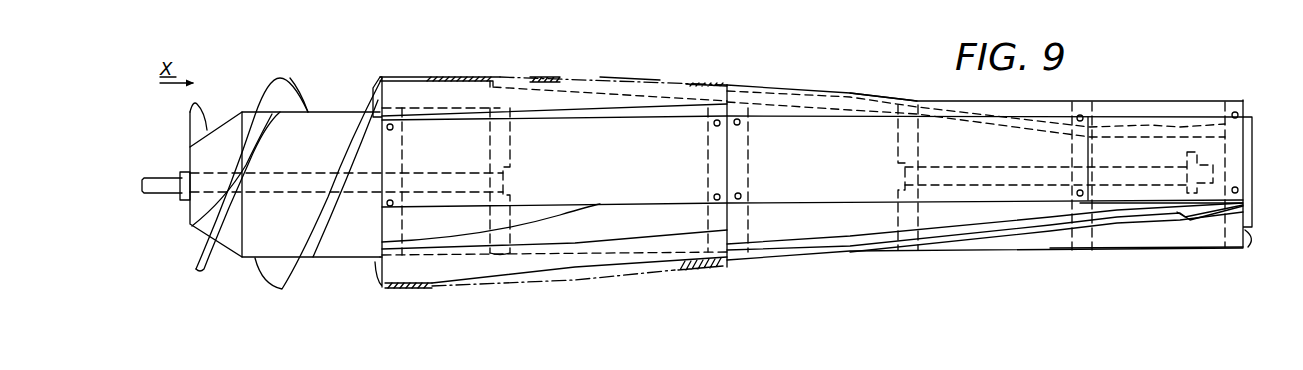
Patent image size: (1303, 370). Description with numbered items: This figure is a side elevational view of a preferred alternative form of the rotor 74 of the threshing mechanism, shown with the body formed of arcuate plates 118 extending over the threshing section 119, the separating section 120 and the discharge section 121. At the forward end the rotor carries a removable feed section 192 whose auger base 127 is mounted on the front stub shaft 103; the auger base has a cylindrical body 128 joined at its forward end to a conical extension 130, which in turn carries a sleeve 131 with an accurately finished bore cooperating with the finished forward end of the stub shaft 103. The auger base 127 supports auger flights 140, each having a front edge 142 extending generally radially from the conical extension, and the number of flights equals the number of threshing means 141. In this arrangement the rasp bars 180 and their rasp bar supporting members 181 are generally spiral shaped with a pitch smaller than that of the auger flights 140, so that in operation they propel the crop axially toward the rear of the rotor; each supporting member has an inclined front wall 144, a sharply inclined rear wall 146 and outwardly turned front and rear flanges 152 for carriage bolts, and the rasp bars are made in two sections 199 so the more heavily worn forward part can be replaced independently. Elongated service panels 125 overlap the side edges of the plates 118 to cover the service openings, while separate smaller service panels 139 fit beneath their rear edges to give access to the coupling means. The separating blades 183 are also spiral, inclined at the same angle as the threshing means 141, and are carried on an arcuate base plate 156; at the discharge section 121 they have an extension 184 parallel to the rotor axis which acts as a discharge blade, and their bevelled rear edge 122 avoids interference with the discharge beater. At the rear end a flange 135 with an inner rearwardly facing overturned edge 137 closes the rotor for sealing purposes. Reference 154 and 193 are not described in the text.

The rotor 74 is at (713, 76).
The front stub shaft 103 is at (165, 196).
The arcuate plates 118 is at (380, 230).
The threshing section 119 is at (604, 64).
The separating section 120 is at (876, 87).
The discharge section 121 is at (1107, 256).
The bevelled rear edge 122 is at (1202, 216).
The service panels 125 is at (383, 197).
The auger base 127 is at (325, 101).
The cylindrical body 128 is at (347, 260).
The conical extension 130 is at (188, 146).
The sleeve 131 is at (183, 172).
The flange 135 is at (1250, 117).
The inner rearwardly facing overturned edge 137 is at (1250, 233).
The separate smaller service panels 139 is at (1088, 140).
The auger flights 140 is at (280, 79).
The threshing means 141 is at (518, 63).
The front edge 142 is at (190, 114).
The front wall 144 is at (441, 95).
The rear wall 146 is at (553, 263).
The front and rear flanges 152 is at (562, 118).
The inlet flange 154 is at (371, 87).
The arcuate base plate 156 is at (835, 202).
The rasp bars 180 is at (428, 78).
The rasp bar supporting members 181 is at (495, 95).
The separating blades 183 is at (790, 88).
The extension 184 is at (1160, 222).
The removable feed section 192 is at (312, 74).
The paddle 193 is at (194, 104).
The two sections 199 is at (557, 78).